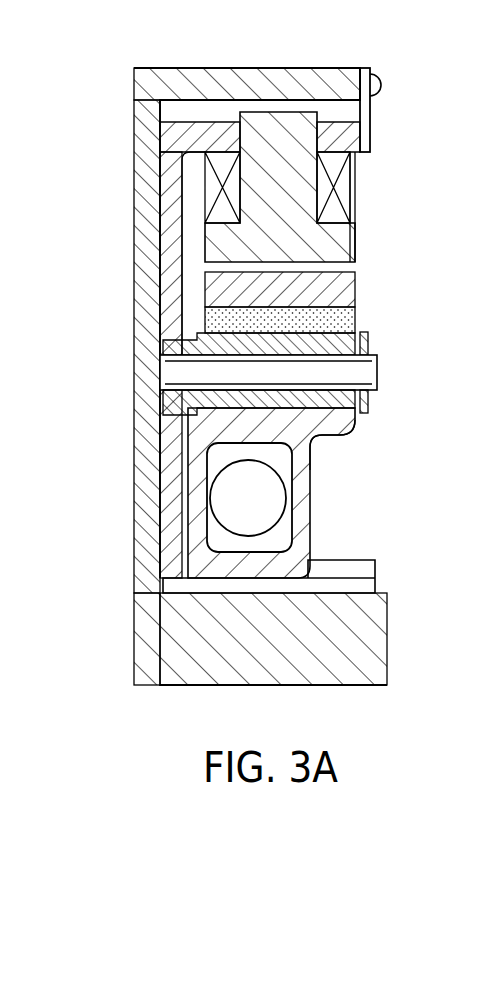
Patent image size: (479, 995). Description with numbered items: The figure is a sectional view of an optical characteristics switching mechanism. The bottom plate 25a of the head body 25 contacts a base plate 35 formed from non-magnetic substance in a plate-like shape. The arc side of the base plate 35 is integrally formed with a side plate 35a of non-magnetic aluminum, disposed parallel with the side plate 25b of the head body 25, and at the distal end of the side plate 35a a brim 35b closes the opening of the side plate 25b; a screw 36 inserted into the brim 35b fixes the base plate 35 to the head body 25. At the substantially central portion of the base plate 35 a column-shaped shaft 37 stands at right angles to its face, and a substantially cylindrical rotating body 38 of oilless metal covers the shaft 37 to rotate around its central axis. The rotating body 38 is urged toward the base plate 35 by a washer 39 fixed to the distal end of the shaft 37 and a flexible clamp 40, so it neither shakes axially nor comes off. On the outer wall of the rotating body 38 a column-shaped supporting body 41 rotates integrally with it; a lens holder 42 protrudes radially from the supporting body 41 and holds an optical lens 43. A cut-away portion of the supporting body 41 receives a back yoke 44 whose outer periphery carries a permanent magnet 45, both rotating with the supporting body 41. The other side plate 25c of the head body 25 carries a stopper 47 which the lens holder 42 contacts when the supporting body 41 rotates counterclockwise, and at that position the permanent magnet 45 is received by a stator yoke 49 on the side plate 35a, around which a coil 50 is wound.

The head body 25 is at (266, 349).
The bottom plate 25a is at (147, 309).
The side plate 25b is at (258, 72).
The other side plate 25c is at (378, 648).
The base plate 35 is at (271, 296).
The side plate 35a is at (366, 133).
The brim 35b is at (367, 67).
The screw 36 is at (383, 92).
The shaft 37 is at (377, 372).
The rotating body 38 is at (300, 489).
The washer 39 is at (368, 342).
The clamp 40 is at (368, 411).
The supporting body 41 is at (320, 420).
The lens holder 42 is at (300, 498).
The optical lens 43 is at (267, 507).
The back yoke 44 is at (350, 315).
The permanent magnet 45 is at (347, 285).
The stopper 47 is at (370, 568).
The stator yoke 49 is at (342, 243).
The coil 50 is at (346, 188).